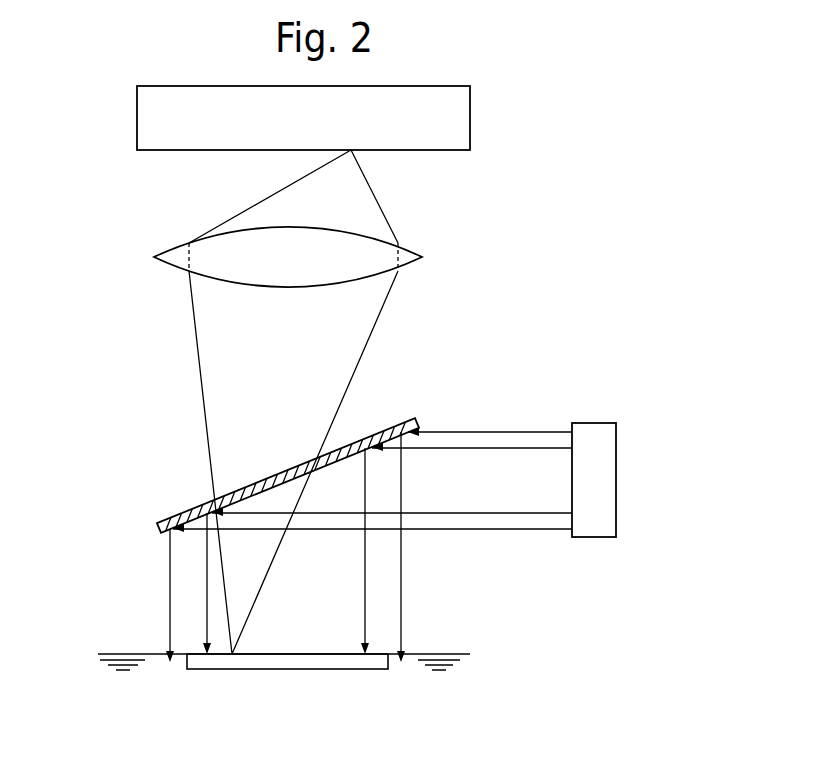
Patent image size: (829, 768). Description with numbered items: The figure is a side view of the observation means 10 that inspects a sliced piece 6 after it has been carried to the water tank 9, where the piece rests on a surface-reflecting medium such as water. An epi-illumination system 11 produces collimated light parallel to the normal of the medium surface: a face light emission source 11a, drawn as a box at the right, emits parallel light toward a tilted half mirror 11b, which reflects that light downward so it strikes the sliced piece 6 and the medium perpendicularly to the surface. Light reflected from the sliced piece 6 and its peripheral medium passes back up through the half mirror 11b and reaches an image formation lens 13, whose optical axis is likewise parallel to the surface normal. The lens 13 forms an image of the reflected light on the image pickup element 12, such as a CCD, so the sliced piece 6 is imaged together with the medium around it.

The sliced piece 6 is at (298, 670).
The water tank 9 is at (469, 653).
The observation means 10 is at (551, 209).
The block keeping storehouse 11 is at (502, 361).
The light source 11a is at (595, 423).
The half mirror 11b is at (401, 419).
The image pickup element 12 is at (470, 124).
The image formation lens 13 is at (422, 257).